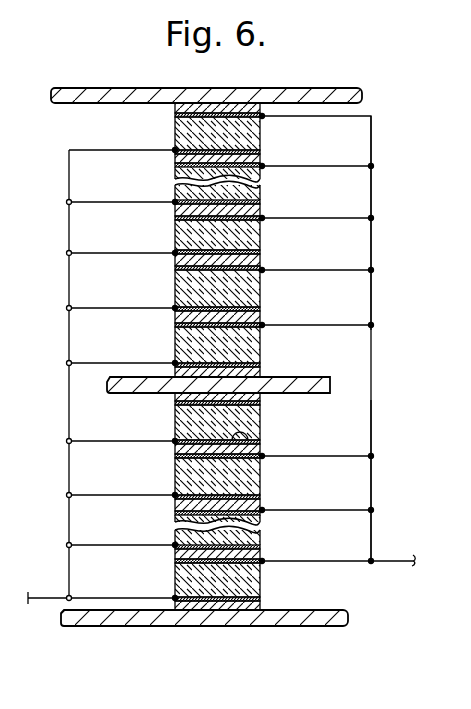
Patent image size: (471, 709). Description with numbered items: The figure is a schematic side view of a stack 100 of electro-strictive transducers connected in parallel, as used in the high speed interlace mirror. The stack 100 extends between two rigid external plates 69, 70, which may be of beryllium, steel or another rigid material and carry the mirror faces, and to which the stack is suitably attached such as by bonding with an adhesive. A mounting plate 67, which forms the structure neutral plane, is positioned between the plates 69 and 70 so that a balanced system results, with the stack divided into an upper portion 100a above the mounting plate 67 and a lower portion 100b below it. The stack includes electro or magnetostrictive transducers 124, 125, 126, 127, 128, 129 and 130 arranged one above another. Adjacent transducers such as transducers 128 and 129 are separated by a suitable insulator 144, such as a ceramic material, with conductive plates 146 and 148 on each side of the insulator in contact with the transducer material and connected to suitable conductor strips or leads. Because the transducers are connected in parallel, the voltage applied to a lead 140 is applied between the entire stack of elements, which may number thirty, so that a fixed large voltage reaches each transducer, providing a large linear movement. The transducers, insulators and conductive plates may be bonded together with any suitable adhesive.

The external plate 69 is at (320, 93).
The mounting plate 67 is at (123, 390).
The external plate 70 is at (68, 626).
The electro-strictive transducer 124 is at (264, 131).
The electro-strictive transducer 125 is at (262, 237).
The electro-strictive transducer 126 is at (262, 292).
The electro-strictive transducer 127 is at (262, 344).
The electro-strictive transducer 128 is at (264, 419).
The electro-strictive transducer 129 is at (262, 480).
The electro-strictive transducer 130 is at (262, 578).
The insulator 144 is at (180, 449).
The conductive plate 146 is at (262, 437).
The conductive plate 148 is at (190, 461).
The stack 100 is at (386, 355).
The stack portion 100a is at (400, 231).
The stack portion 100b is at (401, 464).
The lead 140 is at (393, 559).